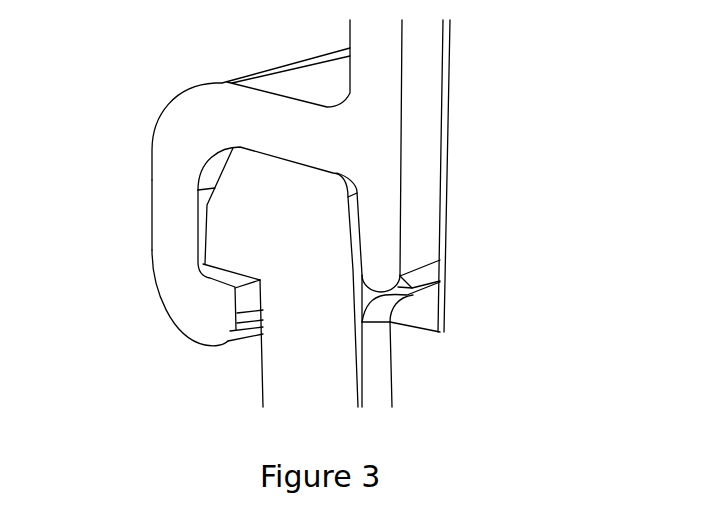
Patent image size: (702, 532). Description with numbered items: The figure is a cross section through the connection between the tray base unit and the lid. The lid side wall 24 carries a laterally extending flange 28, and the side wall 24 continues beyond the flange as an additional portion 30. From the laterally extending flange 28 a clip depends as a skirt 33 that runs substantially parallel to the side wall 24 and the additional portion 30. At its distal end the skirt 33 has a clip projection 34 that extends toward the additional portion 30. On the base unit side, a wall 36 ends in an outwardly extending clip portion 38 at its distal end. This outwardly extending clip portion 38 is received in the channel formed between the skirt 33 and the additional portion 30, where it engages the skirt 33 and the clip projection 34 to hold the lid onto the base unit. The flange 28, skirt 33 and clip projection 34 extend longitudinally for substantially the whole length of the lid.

The first side wall 24 is at (367, 63).
The laterally extending flange 28 is at (283, 93).
The additional portion 30 is at (400, 212).
The skirt 33 is at (152, 247).
The clip projection 34 is at (200, 313).
The wall 36 is at (263, 368).
The outwardly extending clip portion 38 is at (217, 227).